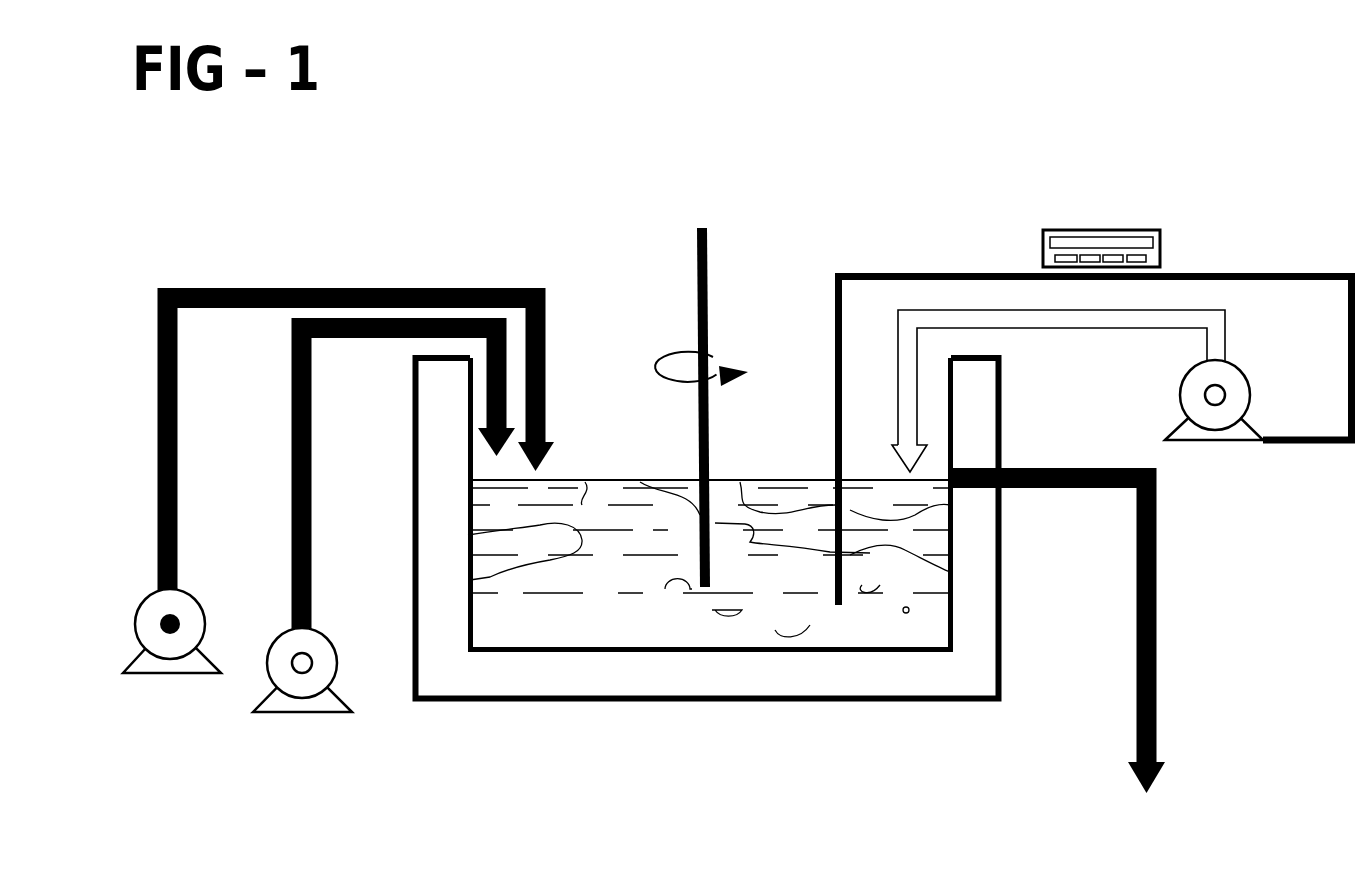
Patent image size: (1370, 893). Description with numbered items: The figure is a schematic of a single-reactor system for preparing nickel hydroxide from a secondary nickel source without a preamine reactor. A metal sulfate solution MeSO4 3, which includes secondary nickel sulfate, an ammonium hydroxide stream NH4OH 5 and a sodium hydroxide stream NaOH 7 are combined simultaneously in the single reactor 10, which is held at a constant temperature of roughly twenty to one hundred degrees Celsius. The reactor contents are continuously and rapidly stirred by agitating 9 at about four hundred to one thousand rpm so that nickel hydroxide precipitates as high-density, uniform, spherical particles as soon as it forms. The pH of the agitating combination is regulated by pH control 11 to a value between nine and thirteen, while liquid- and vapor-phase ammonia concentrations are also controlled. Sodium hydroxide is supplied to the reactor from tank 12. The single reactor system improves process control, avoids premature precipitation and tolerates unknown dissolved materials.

The MeSO4 feed 3 is at (135, 394).
The NH4OH feed 5 is at (345, 608).
The NaOH feed 7 is at (1057, 362).
The agitating 9 is at (698, 323).
The single reactor 10 is at (928, 700).
The pH control 11 is at (1185, 185).
The tank 12 is at (1112, 700).